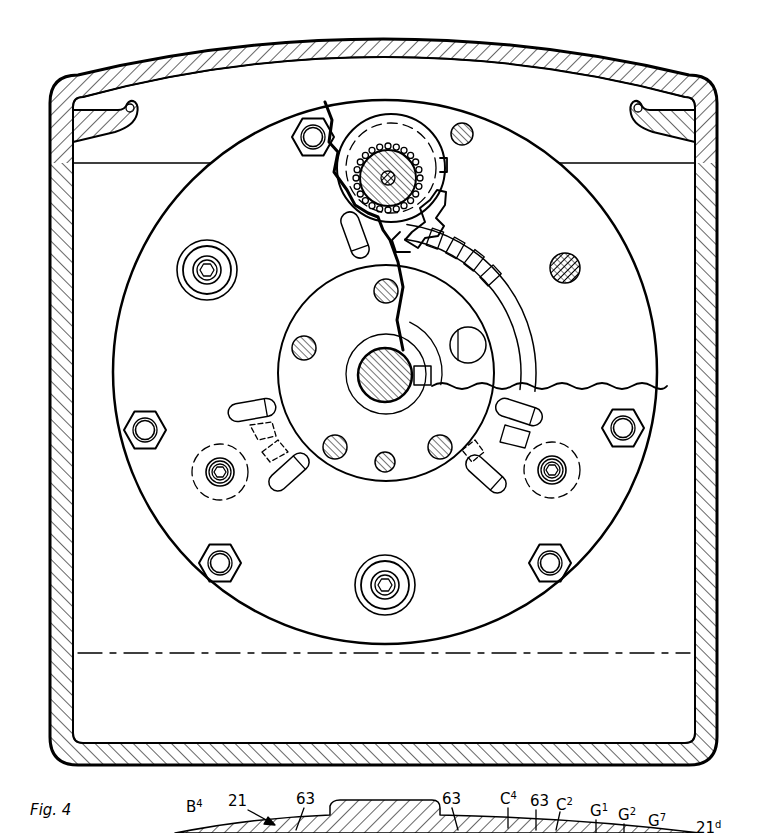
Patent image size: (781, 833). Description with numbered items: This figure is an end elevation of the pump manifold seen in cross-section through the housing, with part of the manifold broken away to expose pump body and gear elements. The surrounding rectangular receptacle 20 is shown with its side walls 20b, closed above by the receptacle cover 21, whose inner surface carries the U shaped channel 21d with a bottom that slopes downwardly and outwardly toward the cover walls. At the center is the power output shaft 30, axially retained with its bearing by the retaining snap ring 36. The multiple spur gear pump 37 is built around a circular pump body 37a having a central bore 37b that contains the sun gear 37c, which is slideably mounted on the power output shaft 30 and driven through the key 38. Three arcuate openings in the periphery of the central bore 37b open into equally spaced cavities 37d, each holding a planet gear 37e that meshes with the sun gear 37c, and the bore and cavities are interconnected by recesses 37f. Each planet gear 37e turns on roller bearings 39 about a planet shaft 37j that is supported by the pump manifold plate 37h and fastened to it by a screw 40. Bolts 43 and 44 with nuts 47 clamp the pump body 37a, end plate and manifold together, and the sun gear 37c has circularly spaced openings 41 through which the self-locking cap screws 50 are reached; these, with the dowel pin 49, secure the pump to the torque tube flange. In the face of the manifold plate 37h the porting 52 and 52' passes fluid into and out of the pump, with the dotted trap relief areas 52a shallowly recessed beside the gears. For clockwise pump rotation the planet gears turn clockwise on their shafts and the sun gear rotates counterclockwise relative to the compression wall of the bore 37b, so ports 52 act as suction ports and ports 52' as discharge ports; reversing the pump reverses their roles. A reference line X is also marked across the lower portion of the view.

The receptacle 20 is at (90, 307).
The side walls 20b is at (66, 408).
The receptacle cover 21 is at (175, 60).
The U shaped channel 21d is at (138, 110).
The power output shaft 30 is at (370, 382).
The retaining snap ring 36 is at (470, 343).
The pump 37 is at (208, 191).
The pump body 37a is at (574, 212).
The central bore 37b is at (506, 284).
The sun gear 37c is at (466, 272).
The cavities 37d is at (455, 163).
The planet gear 37e is at (440, 186).
The recesses 37f is at (440, 232).
The pump manifold plate 37h is at (598, 527).
The planet shaft 37j is at (345, 186).
The key 38 is at (428, 378).
The roller bearings 39 is at (393, 165).
The screw 40 is at (384, 172).
The openings 41 is at (486, 340).
The bolts 43 is at (196, 290).
The bolts 44 is at (300, 140).
The nuts 47 is at (300, 152).
The dowel pin 49 is at (390, 472).
The cap screws 50 is at (374, 291).
The manifold ports 52 is at (422, 356).
The manifold ports 52' is at (353, 451).
The trap relief areas 52a is at (248, 428).
The section line X is at (156, 652).